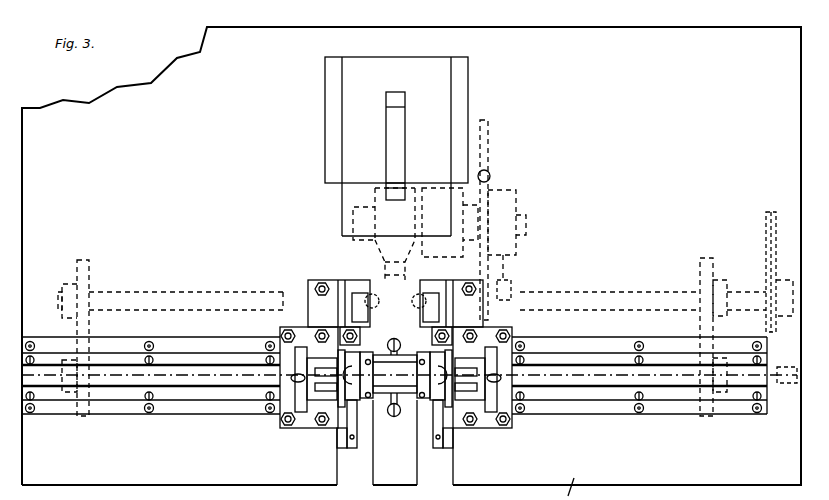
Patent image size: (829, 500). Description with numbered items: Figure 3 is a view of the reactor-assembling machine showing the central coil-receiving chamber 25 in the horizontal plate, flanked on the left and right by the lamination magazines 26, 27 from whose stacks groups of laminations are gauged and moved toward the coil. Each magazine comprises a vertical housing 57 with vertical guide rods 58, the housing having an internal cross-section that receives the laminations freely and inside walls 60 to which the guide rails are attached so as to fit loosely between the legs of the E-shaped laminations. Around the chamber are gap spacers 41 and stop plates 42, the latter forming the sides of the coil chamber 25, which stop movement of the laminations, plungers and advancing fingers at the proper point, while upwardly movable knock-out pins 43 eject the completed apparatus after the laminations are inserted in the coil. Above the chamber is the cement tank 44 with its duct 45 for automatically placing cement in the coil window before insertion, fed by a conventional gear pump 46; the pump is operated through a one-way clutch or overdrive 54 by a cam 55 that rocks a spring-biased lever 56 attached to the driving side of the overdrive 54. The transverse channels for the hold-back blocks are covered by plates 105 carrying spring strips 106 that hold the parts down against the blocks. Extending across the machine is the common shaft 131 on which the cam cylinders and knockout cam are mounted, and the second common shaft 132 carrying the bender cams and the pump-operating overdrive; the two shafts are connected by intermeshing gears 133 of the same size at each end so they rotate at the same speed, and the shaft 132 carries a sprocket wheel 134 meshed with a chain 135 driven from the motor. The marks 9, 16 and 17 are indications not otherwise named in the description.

The section line 9 is at (367, 342).
The upper slide block 16 is at (312, 340).
The forked holder 17 is at (282, 345).
The coil-receiving chamber 25 is at (403, 366).
The left-hand lamination magazine 26 is at (303, 412).
The right-hand lamination magazine 27 is at (480, 412).
The gap spacers 41 is at (392, 398).
The stop plates 42 is at (397, 342).
The knock-out pins 43 is at (357, 422).
The cement tank 44 is at (490, 77).
The duct 45 is at (385, 275).
The gear pump 46 is at (353, 196).
The over-drive or one-way clutch 54 is at (510, 192).
The cam 55 is at (505, 285).
The spring-biased lever 56 is at (490, 162).
The vertical housing 57 is at (290, 403).
The vertical guide rods 58 is at (291, 378).
The inside walls 60 is at (460, 322).
The plates 105 is at (336, 479).
The spring strips 106 is at (345, 434).
The common shaft 131 is at (779, 385).
The second common shaft 132 is at (195, 292).
The intermeshing gears 133 is at (82, 260).
The sprocket wheel 134 is at (768, 280).
The chain 135 is at (767, 222).